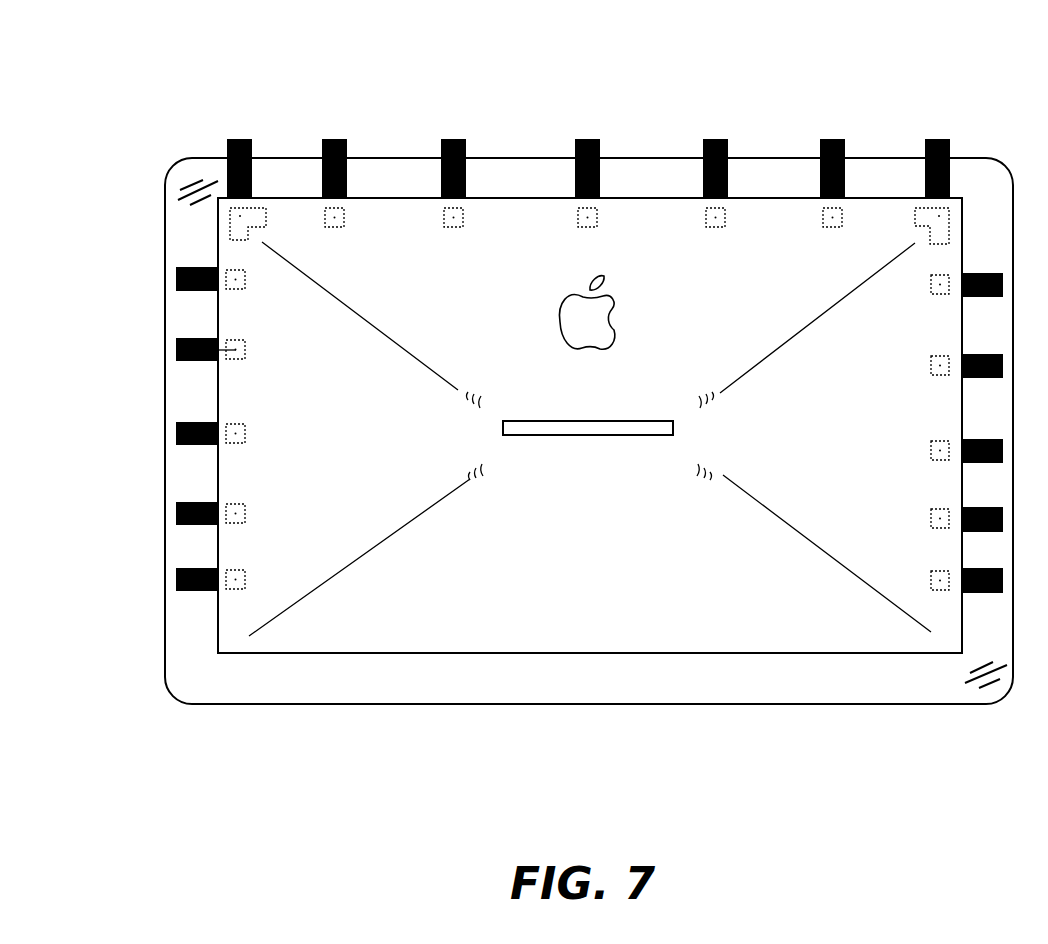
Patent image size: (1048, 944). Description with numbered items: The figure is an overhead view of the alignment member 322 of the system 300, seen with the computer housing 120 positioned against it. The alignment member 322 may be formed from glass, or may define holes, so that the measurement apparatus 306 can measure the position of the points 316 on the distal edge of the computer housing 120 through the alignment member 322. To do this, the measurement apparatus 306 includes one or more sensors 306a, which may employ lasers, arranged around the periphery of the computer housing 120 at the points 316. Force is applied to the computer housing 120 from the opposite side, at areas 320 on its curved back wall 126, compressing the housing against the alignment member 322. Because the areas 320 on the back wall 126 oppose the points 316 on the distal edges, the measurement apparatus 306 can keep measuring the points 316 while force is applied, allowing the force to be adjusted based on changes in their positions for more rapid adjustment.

The system 300 is at (360, 130).
The computer housing 120 is at (630, 198).
The points 316 is at (195, 338).
The areas 320 is at (238, 365).
The sensors 306a is at (176, 584).
The measurement apparatus 306 is at (193, 623).
The alignment member 322 is at (398, 703).
The back wall 126 is at (737, 622).